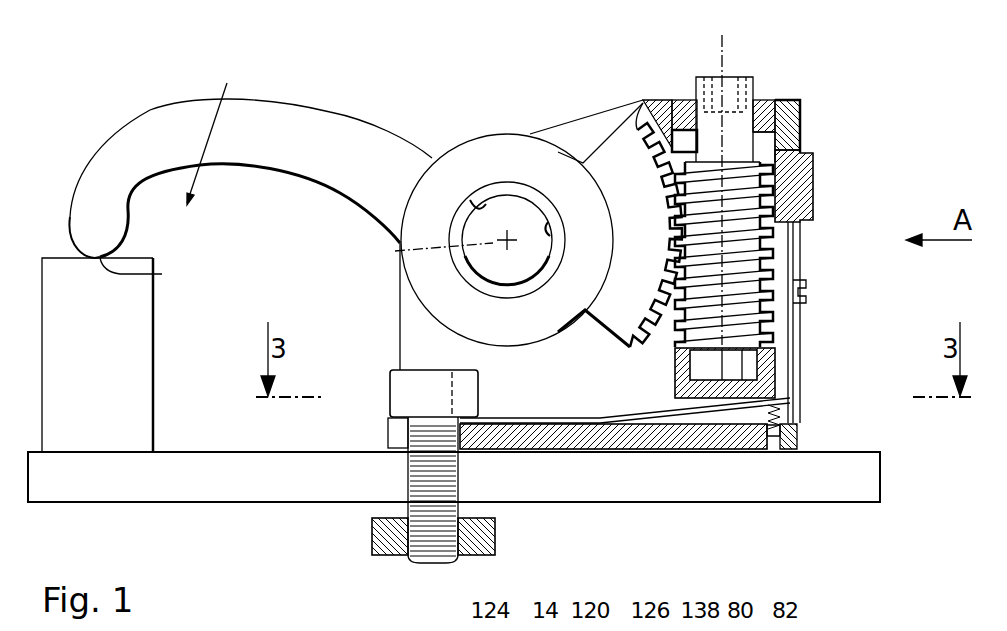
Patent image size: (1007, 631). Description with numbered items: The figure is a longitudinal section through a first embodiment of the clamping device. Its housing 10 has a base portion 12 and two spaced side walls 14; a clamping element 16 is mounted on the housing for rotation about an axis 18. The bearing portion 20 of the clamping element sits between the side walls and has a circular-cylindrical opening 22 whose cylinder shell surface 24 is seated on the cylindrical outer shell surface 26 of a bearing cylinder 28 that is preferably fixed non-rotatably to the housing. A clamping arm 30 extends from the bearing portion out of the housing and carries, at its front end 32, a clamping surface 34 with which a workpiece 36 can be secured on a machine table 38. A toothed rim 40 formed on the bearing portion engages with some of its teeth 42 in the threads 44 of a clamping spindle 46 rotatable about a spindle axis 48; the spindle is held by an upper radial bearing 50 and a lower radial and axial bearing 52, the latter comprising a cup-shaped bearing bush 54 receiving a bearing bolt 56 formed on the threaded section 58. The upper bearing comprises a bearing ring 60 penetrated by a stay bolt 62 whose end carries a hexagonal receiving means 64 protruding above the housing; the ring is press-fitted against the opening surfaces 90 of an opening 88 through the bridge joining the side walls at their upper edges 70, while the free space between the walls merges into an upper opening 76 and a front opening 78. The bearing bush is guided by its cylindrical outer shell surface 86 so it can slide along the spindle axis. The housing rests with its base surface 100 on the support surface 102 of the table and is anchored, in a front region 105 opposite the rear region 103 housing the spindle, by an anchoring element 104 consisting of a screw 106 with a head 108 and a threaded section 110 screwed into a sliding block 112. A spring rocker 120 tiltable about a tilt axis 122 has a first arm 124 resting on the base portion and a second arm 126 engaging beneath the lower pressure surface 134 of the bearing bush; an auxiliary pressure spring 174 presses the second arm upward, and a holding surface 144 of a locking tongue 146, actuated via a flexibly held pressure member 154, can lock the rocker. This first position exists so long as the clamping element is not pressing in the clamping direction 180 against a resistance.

The housing 10 is at (398, 338).
The base portion 12 is at (552, 440).
The side walls 14 is at (608, 112).
The clamping element 16 is at (331, 112).
The axis 18 is at (400, 252).
The bearing portion 20 is at (500, 150).
The circular-cylindrical opening 22 is at (478, 207).
The cylinder shell surface 24 is at (550, 230).
The cylindrical outer shell surface 26 is at (556, 262).
The bearing cylinder 28 is at (527, 272).
The clamping arm 30 is at (256, 105).
The front end 32 is at (82, 235).
The clamping surface 34 is at (118, 276).
The workpiece 36 is at (150, 362).
The machine table 38 is at (90, 492).
The toothed rim 40 is at (648, 317).
The teeth 42 is at (676, 256).
The threads 44 is at (765, 243).
The clamping spindle 46 is at (815, 172).
The spindle axis 48 is at (728, 64).
The upper radial bearing 50 is at (810, 105).
The lower radial and axial bearing 52 is at (792, 385).
The bearing bush 54 is at (770, 375).
The bearing bolt 56 is at (770, 397).
The threaded section 58 is at (770, 266).
The bearing ring 60 is at (818, 118).
The stay bolt 62 is at (805, 140).
The receiving means 64 is at (745, 75).
The upper edges 70 is at (785, 105).
The upper opening 76 is at (577, 123).
The front opening 78 is at (405, 305).
The cylindrical outer shell surface 86 is at (785, 400).
The opening 88 is at (658, 110).
The opening surfaces 90 is at (686, 110).
The base surface 100 is at (585, 440).
The support surface 102 is at (862, 452).
The rear region 103 is at (804, 441).
The anchoring element 104 is at (400, 490).
The front region 105 is at (386, 420).
The screw 106 is at (405, 463).
The head 108 is at (392, 390).
The threaded section 110 is at (420, 553).
The sliding block 112 is at (482, 557).
The spring rocker 120 is at (680, 445).
The tilt axis 122 is at (628, 440).
The first arm 124 is at (515, 420).
The second arm 126 is at (718, 440).
The lower pressure surface 134 is at (678, 402).
The holding surface 144 is at (800, 425).
The locking tongue 146 is at (797, 398).
The pressure member 154 is at (815, 200).
The auxiliary pressure spring 174 is at (768, 440).
The clamping direction 180 is at (222, 90).